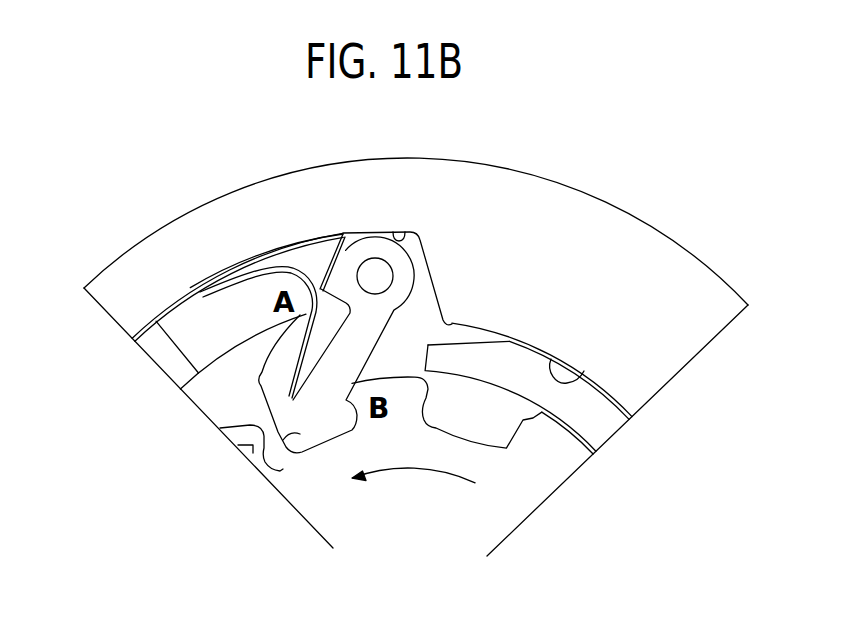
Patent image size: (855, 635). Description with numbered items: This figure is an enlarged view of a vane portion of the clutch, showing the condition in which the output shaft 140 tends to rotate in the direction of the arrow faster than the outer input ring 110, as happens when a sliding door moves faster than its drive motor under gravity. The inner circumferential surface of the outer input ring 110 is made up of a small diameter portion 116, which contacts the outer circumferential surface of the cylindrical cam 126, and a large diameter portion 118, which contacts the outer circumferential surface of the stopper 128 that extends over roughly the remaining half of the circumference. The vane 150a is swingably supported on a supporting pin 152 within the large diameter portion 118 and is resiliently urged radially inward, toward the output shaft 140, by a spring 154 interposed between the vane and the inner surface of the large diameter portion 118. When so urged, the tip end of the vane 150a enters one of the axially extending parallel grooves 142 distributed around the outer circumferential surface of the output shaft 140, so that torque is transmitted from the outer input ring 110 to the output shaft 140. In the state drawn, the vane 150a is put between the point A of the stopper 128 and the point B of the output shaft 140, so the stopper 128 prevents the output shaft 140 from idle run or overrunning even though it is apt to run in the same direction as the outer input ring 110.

The outer input ring 110 is at (475, 183).
The small diameter portion 116 is at (584, 371).
The large diameter portion 118 is at (397, 231).
The cam 126 is at (600, 433).
The stopper 128 is at (156, 357).
The output shaft 140 is at (330, 527).
The grooves 142 is at (222, 428).
The vane 150a is at (283, 440).
The supporting pin 152 is at (372, 258).
The spring 154 is at (290, 267).